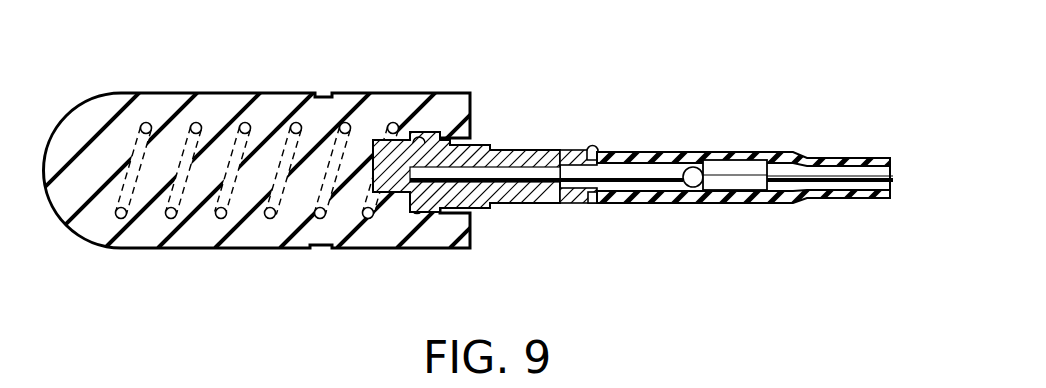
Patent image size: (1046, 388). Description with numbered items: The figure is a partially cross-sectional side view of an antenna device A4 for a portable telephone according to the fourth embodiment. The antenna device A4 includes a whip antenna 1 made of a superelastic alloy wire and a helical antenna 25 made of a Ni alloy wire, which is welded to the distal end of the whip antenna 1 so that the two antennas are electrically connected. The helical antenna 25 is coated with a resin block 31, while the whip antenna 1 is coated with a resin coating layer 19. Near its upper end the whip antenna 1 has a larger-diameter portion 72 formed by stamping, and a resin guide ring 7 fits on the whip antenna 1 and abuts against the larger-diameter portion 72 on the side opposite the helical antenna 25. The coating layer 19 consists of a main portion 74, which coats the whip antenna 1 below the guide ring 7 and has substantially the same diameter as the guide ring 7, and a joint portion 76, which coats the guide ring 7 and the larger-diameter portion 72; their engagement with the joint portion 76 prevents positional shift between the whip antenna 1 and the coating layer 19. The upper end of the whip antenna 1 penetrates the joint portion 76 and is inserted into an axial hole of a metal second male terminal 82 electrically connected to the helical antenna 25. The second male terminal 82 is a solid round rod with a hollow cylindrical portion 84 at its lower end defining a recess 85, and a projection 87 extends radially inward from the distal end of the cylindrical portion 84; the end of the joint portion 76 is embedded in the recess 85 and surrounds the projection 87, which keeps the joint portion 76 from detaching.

The antenna device A4 is at (468, 68).
The helical antenna 25 is at (294, 124).
The resin block 31 is at (247, 236).
The second male terminal 82 is at (520, 150).
The hollow cylindrical portion 84 is at (574, 150).
The recess 85 is at (573, 203).
The projection 87 is at (600, 201).
The joint portion 76 is at (646, 152).
The larger-diameter portion 72 is at (691, 167).
The guide ring 7 is at (735, 160).
The whip antenna 1 is at (822, 172).
The main portion 74 is at (862, 162).
The coating layer 19 is at (826, 199).